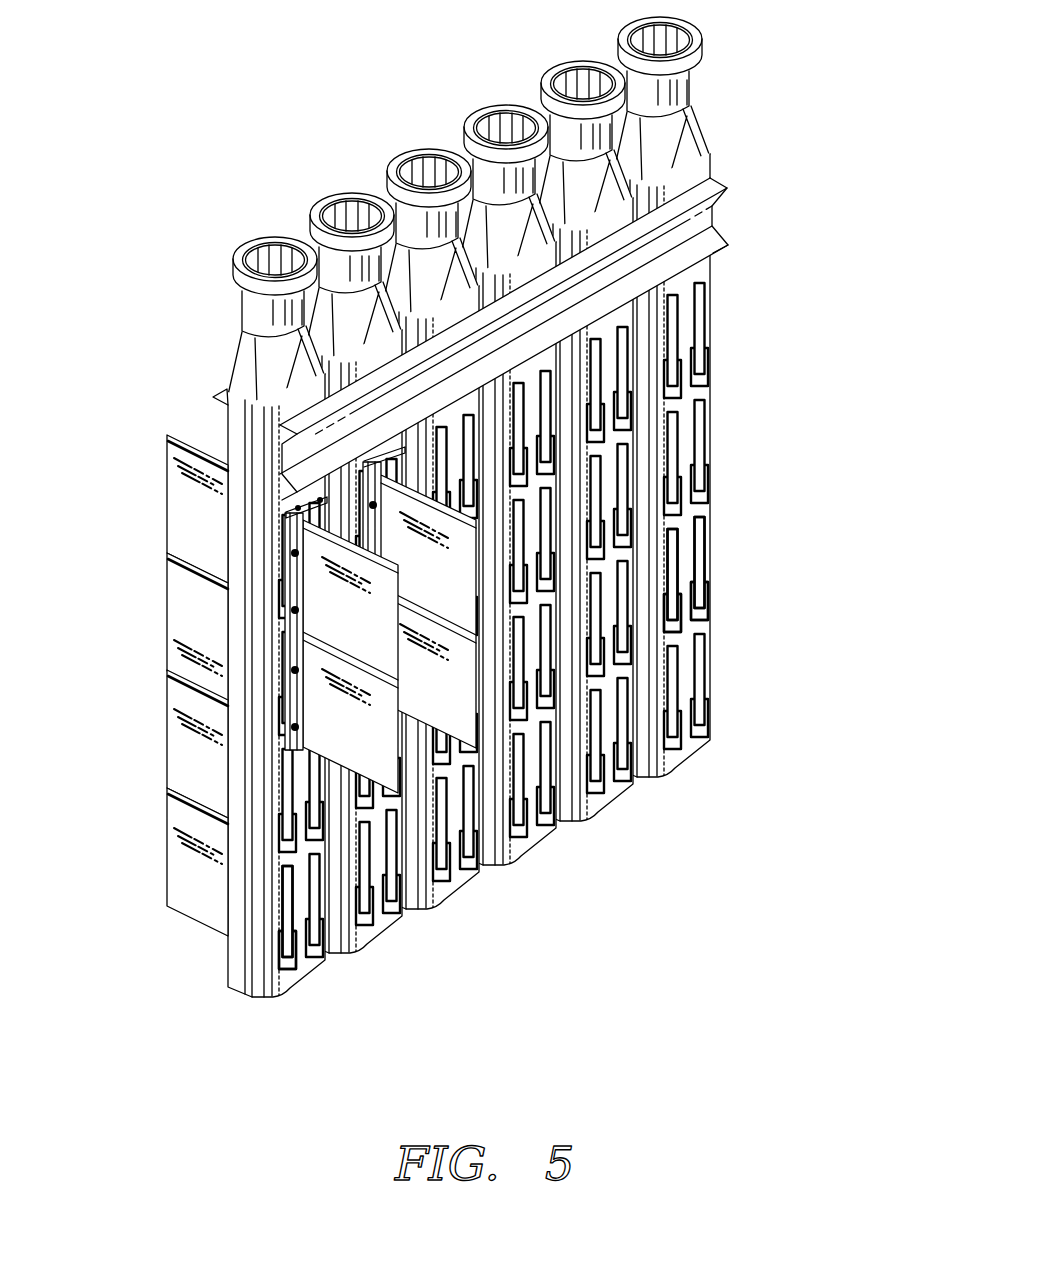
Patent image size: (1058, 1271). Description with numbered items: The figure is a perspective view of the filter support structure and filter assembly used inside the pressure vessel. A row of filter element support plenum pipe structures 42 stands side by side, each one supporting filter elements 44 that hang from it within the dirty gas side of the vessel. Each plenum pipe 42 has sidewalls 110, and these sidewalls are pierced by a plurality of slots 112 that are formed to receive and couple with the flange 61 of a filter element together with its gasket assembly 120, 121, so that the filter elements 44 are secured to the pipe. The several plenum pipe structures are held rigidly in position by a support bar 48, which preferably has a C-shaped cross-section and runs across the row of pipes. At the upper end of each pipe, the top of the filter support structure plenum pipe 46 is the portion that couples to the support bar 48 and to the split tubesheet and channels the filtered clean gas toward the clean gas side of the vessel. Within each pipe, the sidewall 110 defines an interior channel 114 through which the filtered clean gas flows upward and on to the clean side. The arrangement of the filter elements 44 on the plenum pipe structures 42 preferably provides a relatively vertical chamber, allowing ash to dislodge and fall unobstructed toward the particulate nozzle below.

The filter element support plenum pipe structure 42 is at (700, 443).
The filter element 44 is at (193, 752).
The top of filter support structure plenum pipe 46 is at (257, 313).
The support bar 48 is at (690, 233).
The flange 61 is at (283, 722).
The sidewall 110 is at (695, 748).
The slot 112 is at (703, 716).
The interior channel 114 is at (355, 214).
The gasket assembly 120 is at (297, 588).
The gasket assembly 121 is at (297, 588).